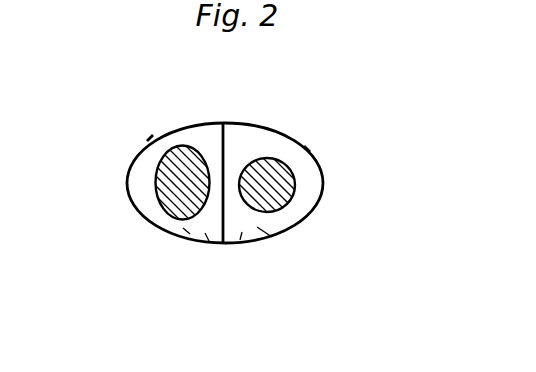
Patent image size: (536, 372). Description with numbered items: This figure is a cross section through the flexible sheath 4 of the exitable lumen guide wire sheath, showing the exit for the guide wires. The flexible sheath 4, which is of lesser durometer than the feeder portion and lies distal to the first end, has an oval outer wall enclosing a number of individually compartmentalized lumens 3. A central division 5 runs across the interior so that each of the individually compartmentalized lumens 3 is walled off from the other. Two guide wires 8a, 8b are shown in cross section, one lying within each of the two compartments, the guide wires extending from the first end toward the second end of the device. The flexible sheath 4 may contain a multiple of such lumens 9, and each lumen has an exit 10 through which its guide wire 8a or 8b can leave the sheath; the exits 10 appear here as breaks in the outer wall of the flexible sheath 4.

The individually compartmentalized lumens 3 is at (188, 230).
The flexible sheath 4 is at (189, 125).
The division 5 is at (228, 140).
The guide wire 8a is at (157, 198).
The guide wire 8b is at (297, 188).
The lumens 9 is at (242, 232).
The exit 10 is at (147, 142).